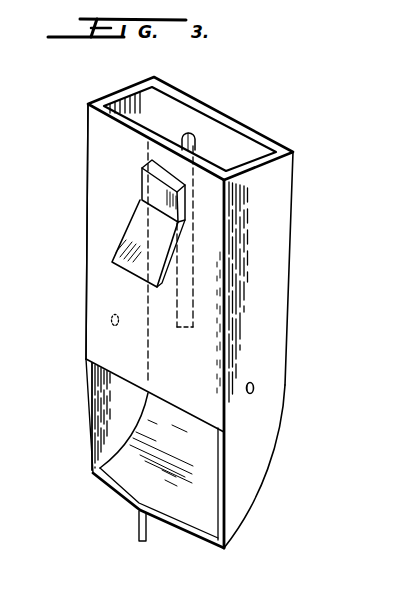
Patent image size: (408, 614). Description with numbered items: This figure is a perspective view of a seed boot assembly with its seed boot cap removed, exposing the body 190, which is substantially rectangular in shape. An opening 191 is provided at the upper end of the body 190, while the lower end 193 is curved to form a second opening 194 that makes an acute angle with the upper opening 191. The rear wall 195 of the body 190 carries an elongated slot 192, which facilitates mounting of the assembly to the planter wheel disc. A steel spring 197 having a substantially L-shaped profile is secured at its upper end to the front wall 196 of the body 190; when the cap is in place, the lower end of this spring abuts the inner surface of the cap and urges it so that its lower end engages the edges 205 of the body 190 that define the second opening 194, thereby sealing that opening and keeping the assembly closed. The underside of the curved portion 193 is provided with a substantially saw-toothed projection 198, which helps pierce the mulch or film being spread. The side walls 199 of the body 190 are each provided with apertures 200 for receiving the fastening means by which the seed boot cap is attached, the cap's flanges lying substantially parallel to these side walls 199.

The body 190 is at (72, 386).
The opening 191 is at (258, 140).
The elongated slot 192 is at (197, 137).
The lower end 193 is at (252, 508).
The second opening 194 is at (122, 475).
The rear wall 195 is at (181, 127).
The front wall 196 is at (193, 364).
The steel spring 197 is at (124, 233).
The saw-toothed projection 198 is at (148, 527).
The side walls 199 is at (132, 86).
The apertures 200 is at (109, 320).
The edges 205 is at (218, 439).